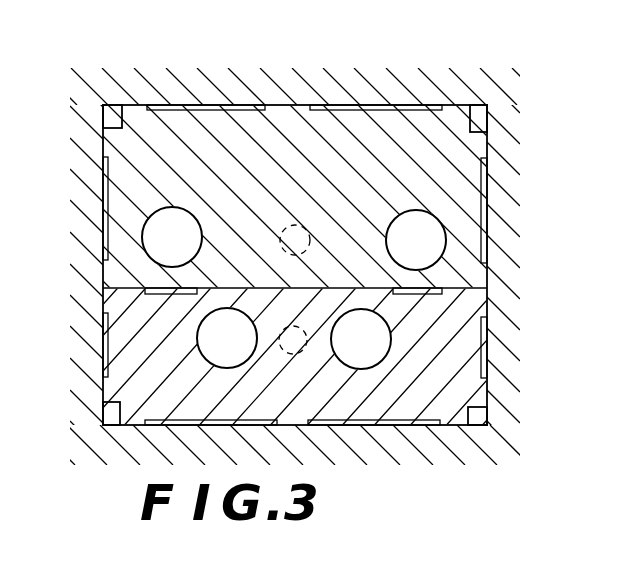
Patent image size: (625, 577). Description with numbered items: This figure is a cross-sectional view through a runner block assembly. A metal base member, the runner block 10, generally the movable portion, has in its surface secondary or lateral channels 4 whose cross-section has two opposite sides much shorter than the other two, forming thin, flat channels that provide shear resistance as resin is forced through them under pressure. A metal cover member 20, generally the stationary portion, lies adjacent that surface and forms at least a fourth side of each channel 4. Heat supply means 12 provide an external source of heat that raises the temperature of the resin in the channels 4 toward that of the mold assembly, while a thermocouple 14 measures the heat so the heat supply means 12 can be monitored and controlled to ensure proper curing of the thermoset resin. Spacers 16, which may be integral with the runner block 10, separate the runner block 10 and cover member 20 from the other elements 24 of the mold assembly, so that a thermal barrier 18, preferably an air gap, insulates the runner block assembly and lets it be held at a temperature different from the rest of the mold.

The channel 4 is at (106, 316).
The runner block 10 is at (0, 256).
The heat supply means 12 is at (152, 246).
The thermocouple 14 is at (278, 234).
The spacers 16 is at (128, 103).
The thermal barrier 18 is at (352, 105).
The cover member 20 is at (270, 132).
The other elements of the mold assembly 24 is at (400, 455).